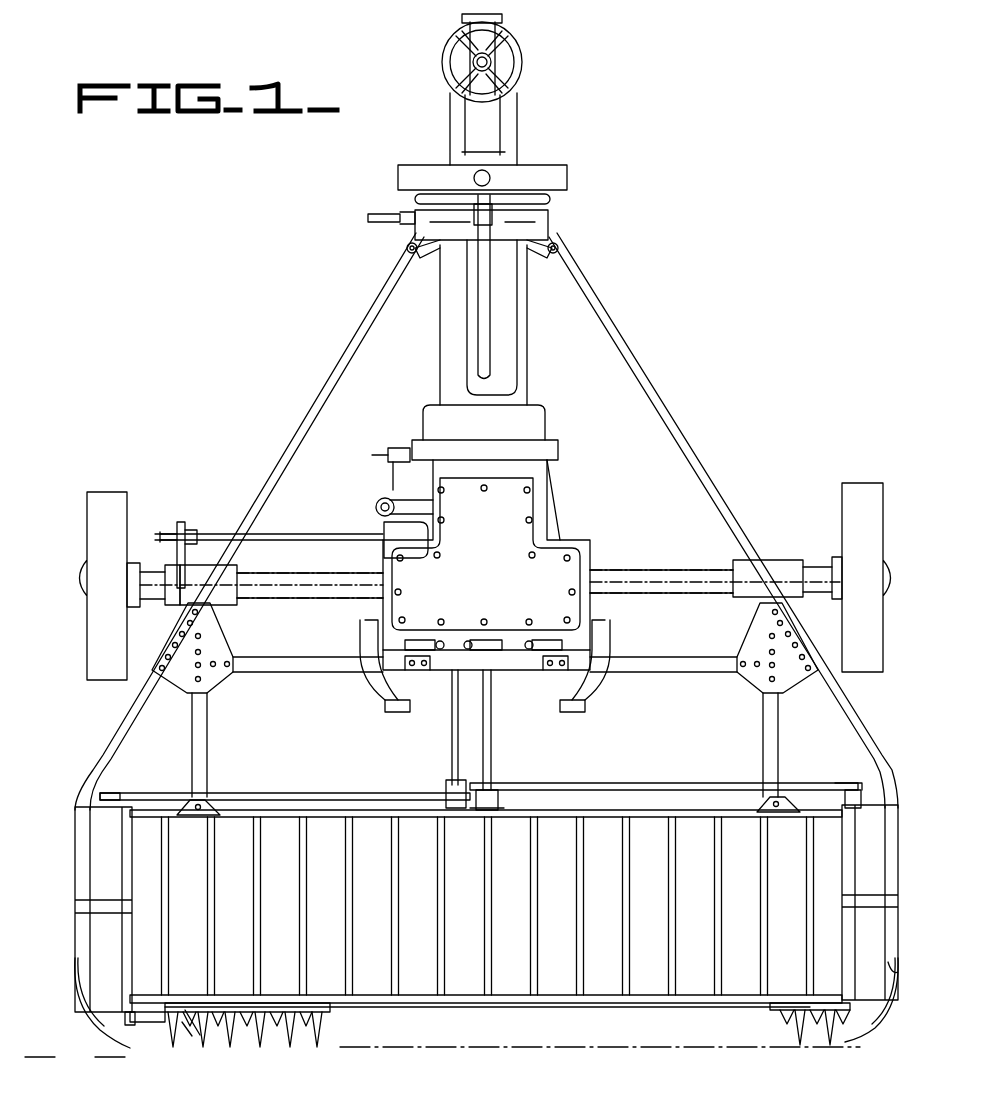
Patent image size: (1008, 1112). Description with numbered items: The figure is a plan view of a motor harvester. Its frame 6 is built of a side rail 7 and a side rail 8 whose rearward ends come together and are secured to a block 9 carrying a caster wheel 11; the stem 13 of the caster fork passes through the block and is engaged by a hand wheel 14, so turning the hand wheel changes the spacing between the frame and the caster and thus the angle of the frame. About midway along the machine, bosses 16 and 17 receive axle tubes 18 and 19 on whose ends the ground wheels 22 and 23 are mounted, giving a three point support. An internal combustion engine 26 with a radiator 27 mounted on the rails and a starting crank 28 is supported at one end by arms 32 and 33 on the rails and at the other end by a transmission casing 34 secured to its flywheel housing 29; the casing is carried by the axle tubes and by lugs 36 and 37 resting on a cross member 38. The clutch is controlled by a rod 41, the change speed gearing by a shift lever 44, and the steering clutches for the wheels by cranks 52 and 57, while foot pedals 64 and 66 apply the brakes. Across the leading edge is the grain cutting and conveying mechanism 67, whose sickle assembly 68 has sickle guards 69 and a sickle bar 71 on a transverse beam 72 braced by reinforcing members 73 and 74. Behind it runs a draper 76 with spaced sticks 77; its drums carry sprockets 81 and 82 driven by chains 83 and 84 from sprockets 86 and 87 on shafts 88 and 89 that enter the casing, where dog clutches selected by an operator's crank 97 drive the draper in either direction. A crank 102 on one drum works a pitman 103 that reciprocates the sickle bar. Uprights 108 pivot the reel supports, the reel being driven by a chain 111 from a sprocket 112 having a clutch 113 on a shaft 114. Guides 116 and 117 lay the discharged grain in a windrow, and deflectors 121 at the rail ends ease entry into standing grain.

The frame 6 is at (334, 378).
The side rail 7 is at (382, 303).
The side rail 8 is at (587, 303).
The block 9 is at (497, 120).
The caster wheel 11 is at (510, 19).
The stem 13 is at (492, 60).
The hand wheel 14 is at (521, 73).
The boss 16 is at (190, 565).
The boss 17 is at (790, 560).
The axle tube 18 is at (302, 573).
The axle tube 19 is at (665, 570).
The wheel 22 is at (112, 492).
The wheel 23 is at (862, 483).
The internal combustion engine 26 is at (527, 348).
The radiator 27 is at (567, 178).
The starting crank 28 is at (380, 211).
The flywheel housing 29 is at (545, 420).
The arm 32 is at (405, 246).
The arm 33 is at (560, 246).
The transmission casing 34 is at (548, 495).
The lug 36 is at (420, 672).
The lug 37 is at (550, 672).
The cross member 38 is at (305, 672).
The rod 41 is at (393, 448).
The shift lever 44 is at (378, 502).
The crank 52 is at (424, 640).
The steering crank 57 is at (545, 640).
The foot pedal 64 is at (385, 707).
The foot pedal 66 is at (585, 707).
The grain cutting and conveying mechanism 67 is at (522, 893).
The sickle assembly 68 is at (798, 1035).
The sickle guards 69 is at (235, 1040).
The sickle bar 71 is at (195, 1035).
The transverse beam 72 is at (330, 1008).
The reinforcing member 73 is at (207, 742).
The reinforcing member 74 is at (763, 742).
The draper 76 is at (510, 997).
The sticks 77 is at (307, 866).
The sprocket 81 is at (130, 793).
The sprocket 82 is at (850, 786).
The chain 83 is at (312, 793).
The chain 84 is at (635, 783).
The sprocket 86 is at (446, 785).
The sprocket 87 is at (498, 792).
The shaft 88 is at (452, 702).
The shaft 89 is at (491, 702).
The operator's crank 97 is at (498, 640).
The crank 102 is at (132, 1028).
The pitman 103 is at (142, 1022).
The uprights 108 is at (200, 815).
The chain 111 is at (168, 600).
The sprocket 112 is at (178, 524).
The clutch 113 is at (190, 528).
The shaft 114 is at (297, 535).
The guide 116 is at (118, 948).
The guide 117 is at (883, 943).
The deflectors 121 is at (92, 1030).